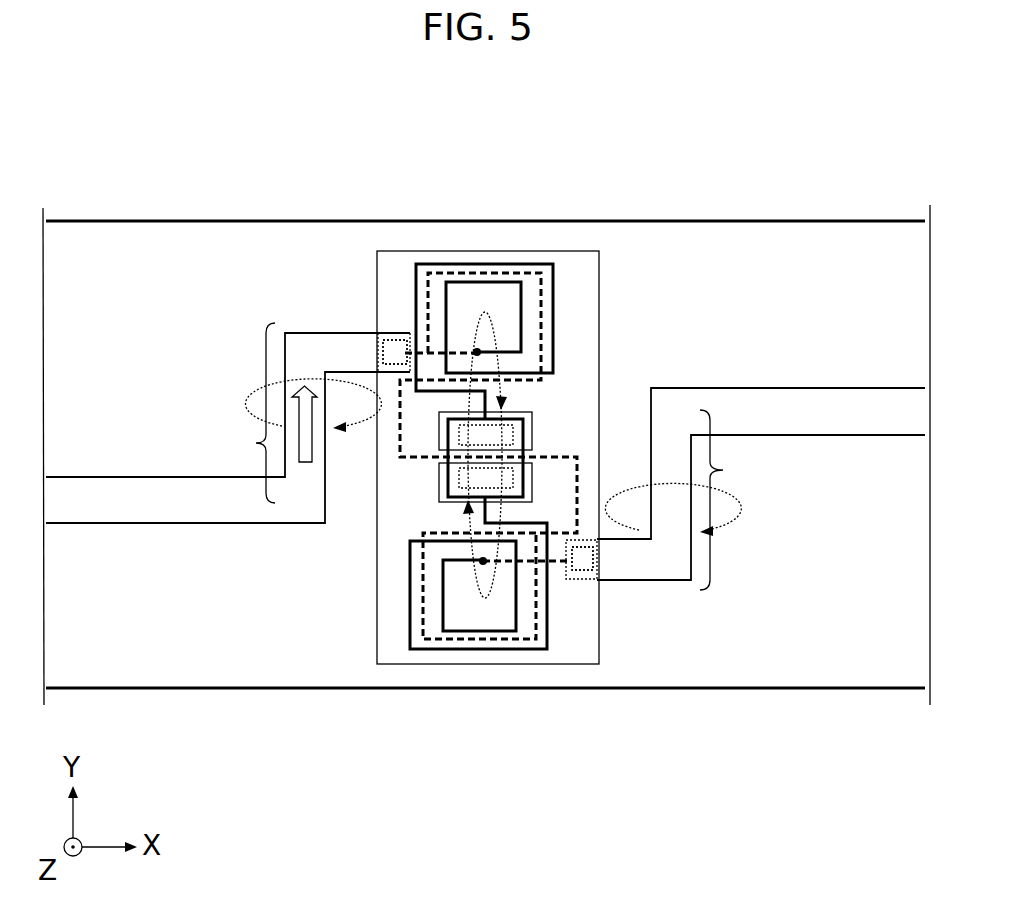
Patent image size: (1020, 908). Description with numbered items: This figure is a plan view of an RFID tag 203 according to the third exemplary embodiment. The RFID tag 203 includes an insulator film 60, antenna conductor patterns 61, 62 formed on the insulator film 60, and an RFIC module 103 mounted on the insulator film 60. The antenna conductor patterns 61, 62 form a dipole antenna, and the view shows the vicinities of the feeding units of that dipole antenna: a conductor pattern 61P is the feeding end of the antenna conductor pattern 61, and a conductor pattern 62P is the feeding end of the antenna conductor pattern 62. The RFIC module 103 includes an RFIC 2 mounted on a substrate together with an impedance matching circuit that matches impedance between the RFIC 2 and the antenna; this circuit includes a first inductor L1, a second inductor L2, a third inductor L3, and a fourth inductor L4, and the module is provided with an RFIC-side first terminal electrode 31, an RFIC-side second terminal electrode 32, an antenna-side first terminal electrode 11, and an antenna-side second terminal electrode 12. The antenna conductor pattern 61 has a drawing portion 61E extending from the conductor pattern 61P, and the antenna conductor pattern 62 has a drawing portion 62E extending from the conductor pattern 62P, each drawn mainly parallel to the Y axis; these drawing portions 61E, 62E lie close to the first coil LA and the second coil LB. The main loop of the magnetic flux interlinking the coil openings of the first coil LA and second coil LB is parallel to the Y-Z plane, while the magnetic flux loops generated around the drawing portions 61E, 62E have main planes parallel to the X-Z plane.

The RFID tag 203 is at (121, 104).
The insulator film 60 is at (747, 237).
The antenna conductor pattern 61 is at (172, 512).
The drawing portion 61E is at (234, 413).
The conductor pattern 61P is at (380, 337).
The antenna-side first terminal electrode 11 is at (407, 353).
The antenna conductor pattern 62 is at (828, 388).
The drawing portion 62E is at (743, 500).
The conductor pattern 62P is at (580, 580).
The antenna-side second terminal electrode 12 is at (585, 558).
The RFIC module 103 is at (578, 270).
The first coil LA is at (518, 253).
The second coil LB is at (462, 659).
The first inductor L1 is at (553, 300).
The second inductor L2 is at (410, 620).
The third inductor L3 is at (541, 343).
The fourth inductor L4 is at (422, 590).
The RFIC-side first terminal electrode 31 is at (532, 425).
The RFIC-side second terminal electrode 32 is at (532, 478).
The RFIC 2 is at (445, 478).